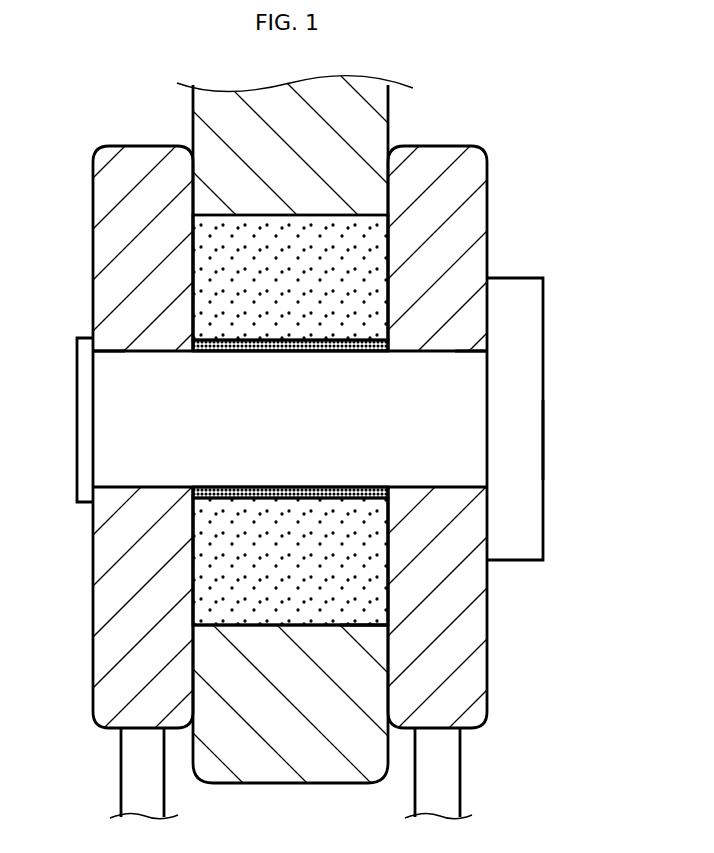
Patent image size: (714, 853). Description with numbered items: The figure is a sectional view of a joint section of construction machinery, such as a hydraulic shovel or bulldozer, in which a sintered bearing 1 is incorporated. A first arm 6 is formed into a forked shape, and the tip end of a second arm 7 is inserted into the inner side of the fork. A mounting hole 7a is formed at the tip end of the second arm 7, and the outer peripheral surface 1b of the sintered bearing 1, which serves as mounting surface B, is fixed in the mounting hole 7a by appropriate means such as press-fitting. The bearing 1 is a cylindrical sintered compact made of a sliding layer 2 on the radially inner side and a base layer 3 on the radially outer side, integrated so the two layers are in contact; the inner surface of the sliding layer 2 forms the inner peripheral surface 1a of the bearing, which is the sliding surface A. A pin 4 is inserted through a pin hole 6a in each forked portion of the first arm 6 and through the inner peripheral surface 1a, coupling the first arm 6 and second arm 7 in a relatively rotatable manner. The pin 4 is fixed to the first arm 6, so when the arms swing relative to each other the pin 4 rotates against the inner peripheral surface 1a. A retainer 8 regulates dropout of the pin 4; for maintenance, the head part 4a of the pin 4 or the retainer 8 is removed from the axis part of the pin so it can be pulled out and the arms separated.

The sintered bearing 1 is at (337, 261).
The inner peripheral surface 1a is at (303, 487).
The outer peripheral surface 1b is at (252, 625).
The sliding layer 2 is at (345, 500).
The base layer 3 is at (233, 563).
The pin 4 is at (413, 348).
The head part 4a is at (525, 435).
The first arm 6 is at (465, 172).
The pin hole 6a is at (115, 352).
The second arm 7 is at (363, 109).
The mounting hole 7a is at (358, 626).
The retainer 8 is at (83, 432).